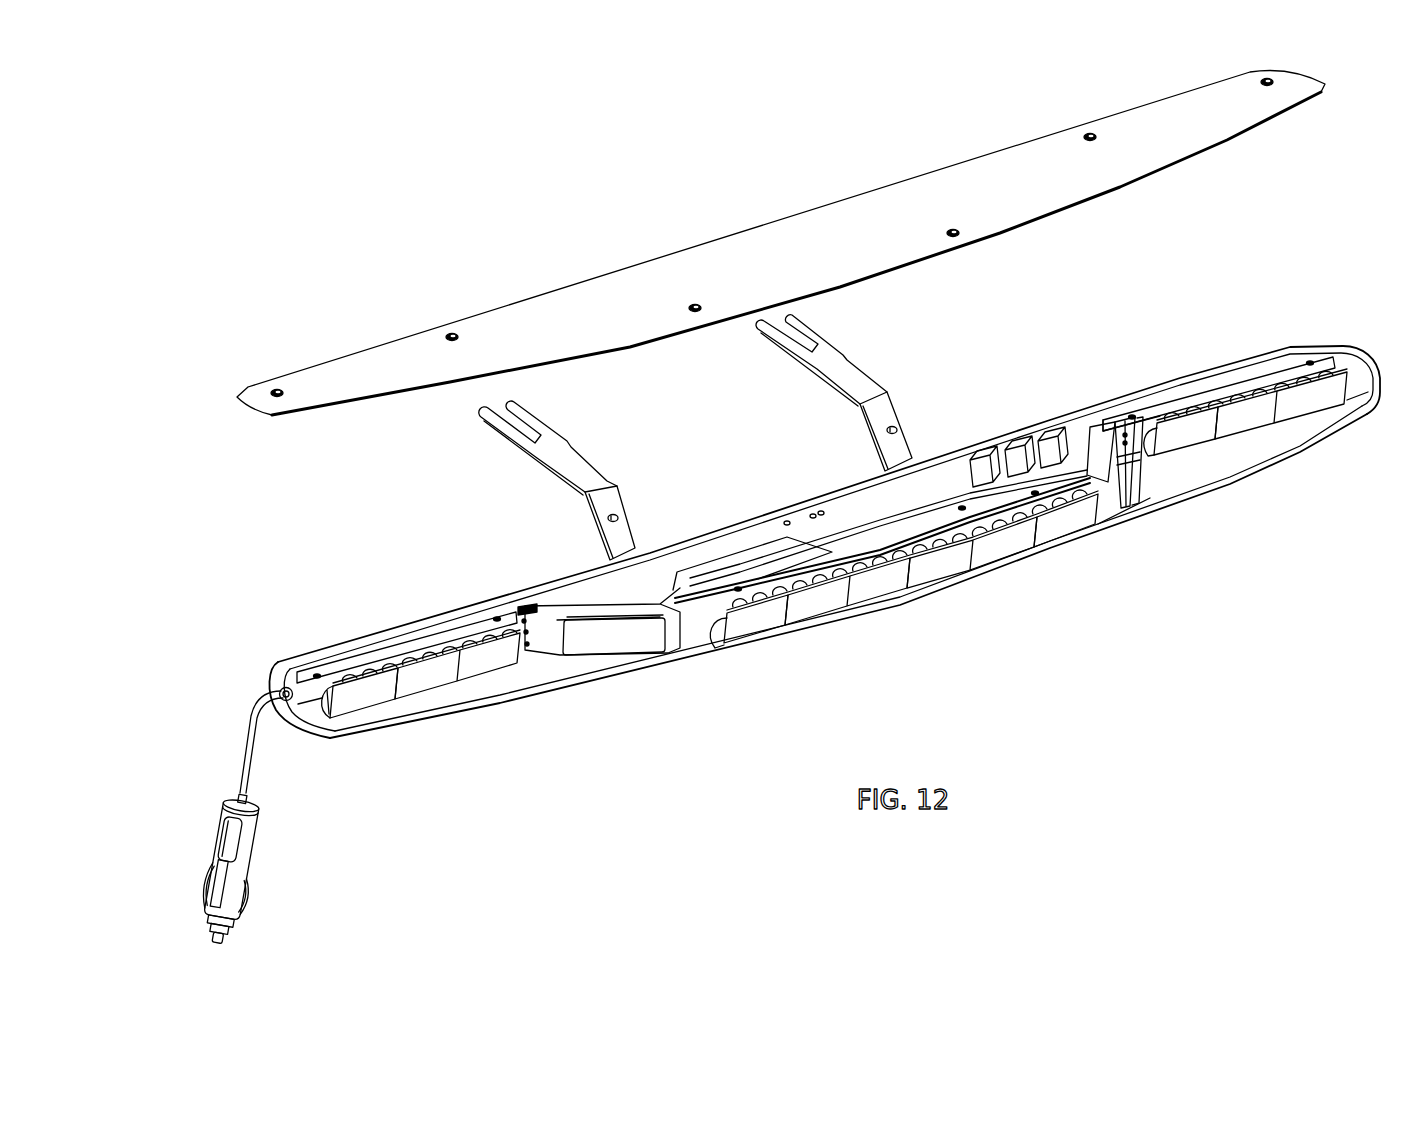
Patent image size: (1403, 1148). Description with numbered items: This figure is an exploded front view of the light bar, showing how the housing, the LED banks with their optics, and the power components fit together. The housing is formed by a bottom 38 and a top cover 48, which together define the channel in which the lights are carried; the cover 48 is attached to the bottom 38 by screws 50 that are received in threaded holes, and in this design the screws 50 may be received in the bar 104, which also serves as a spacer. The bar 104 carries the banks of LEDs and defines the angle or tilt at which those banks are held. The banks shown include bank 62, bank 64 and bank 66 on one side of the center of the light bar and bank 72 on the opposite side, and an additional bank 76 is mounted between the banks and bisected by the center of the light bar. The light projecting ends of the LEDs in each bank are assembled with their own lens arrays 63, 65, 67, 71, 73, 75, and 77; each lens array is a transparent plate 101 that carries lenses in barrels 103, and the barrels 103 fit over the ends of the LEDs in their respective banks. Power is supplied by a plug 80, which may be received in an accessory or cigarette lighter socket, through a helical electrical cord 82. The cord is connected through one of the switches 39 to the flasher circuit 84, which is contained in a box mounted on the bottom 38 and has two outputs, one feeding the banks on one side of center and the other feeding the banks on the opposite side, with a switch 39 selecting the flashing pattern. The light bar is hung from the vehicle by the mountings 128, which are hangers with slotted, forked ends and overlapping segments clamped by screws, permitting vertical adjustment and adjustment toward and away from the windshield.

The bottom 38 is at (553, 700).
The switch 39 is at (1046, 434).
The top cover 48 is at (806, 250).
The screws 50 is at (457, 333).
The LED bank 62 is at (482, 633).
The lens array 63 is at (410, 686).
The LED bank 64 is at (553, 632).
The lens array 65 is at (628, 653).
The LED bank 66 is at (1162, 422).
The lens array 67 is at (753, 627).
The lens array 71 is at (880, 590).
The LED bank 72 is at (1260, 430).
The lens array 73 is at (995, 553).
The lens array 75 is at (1050, 532).
The additional LED bank 76 is at (868, 553).
The lens array 77 is at (1200, 450).
The plug 80 is at (255, 842).
The helical electrical cord 82 is at (260, 701).
The flasher circuit 84 is at (753, 562).
The transparent plate 101 is at (1213, 428).
The barrels 103 is at (1121, 506).
The bar 104 is at (390, 650).
The mountings 128 is at (827, 395).